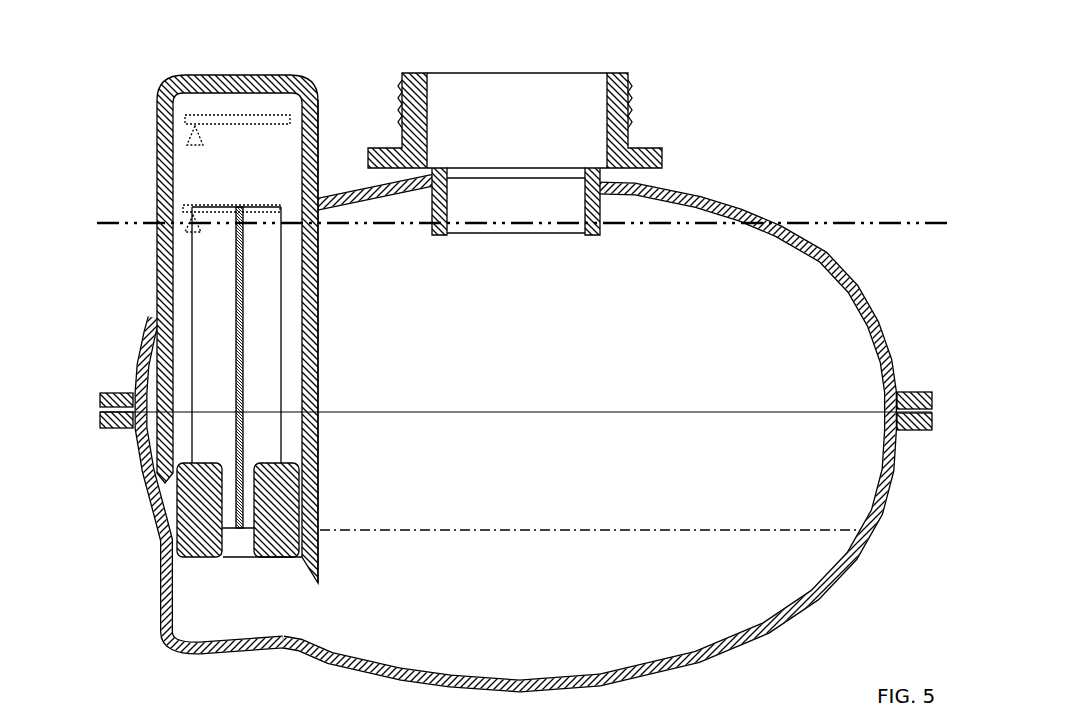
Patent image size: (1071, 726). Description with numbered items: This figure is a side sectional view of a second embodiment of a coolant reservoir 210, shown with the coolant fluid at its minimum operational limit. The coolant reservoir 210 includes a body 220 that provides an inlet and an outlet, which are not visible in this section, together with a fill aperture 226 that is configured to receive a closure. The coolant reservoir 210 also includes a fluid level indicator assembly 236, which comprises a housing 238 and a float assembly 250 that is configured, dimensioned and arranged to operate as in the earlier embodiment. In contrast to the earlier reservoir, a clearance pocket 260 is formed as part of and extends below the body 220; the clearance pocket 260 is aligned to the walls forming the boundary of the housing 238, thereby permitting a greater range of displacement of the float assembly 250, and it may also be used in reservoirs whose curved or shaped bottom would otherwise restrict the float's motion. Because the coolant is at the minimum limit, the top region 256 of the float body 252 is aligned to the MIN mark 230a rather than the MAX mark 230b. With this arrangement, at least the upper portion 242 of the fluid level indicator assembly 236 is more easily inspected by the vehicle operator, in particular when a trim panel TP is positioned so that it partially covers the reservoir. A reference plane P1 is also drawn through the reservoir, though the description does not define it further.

The coolant reservoir 210 is at (490, 352).
The body 220 is at (858, 296).
The fill aperture 226 is at (597, 97).
The MIN mark 230a is at (195, 204).
The MAX mark 230b is at (258, 118).
The fluid level indicator assembly 236 is at (240, 301).
The housing 238 is at (310, 302).
The upper portion 242 is at (162, 150).
The float assembly 250 is at (186, 296).
The float body 252 is at (260, 372).
The top region 256 is at (278, 212).
The clearance pocket 260 is at (160, 575).
The trim panel TP is at (803, 224).
The first plane P1 is at (745, 531).